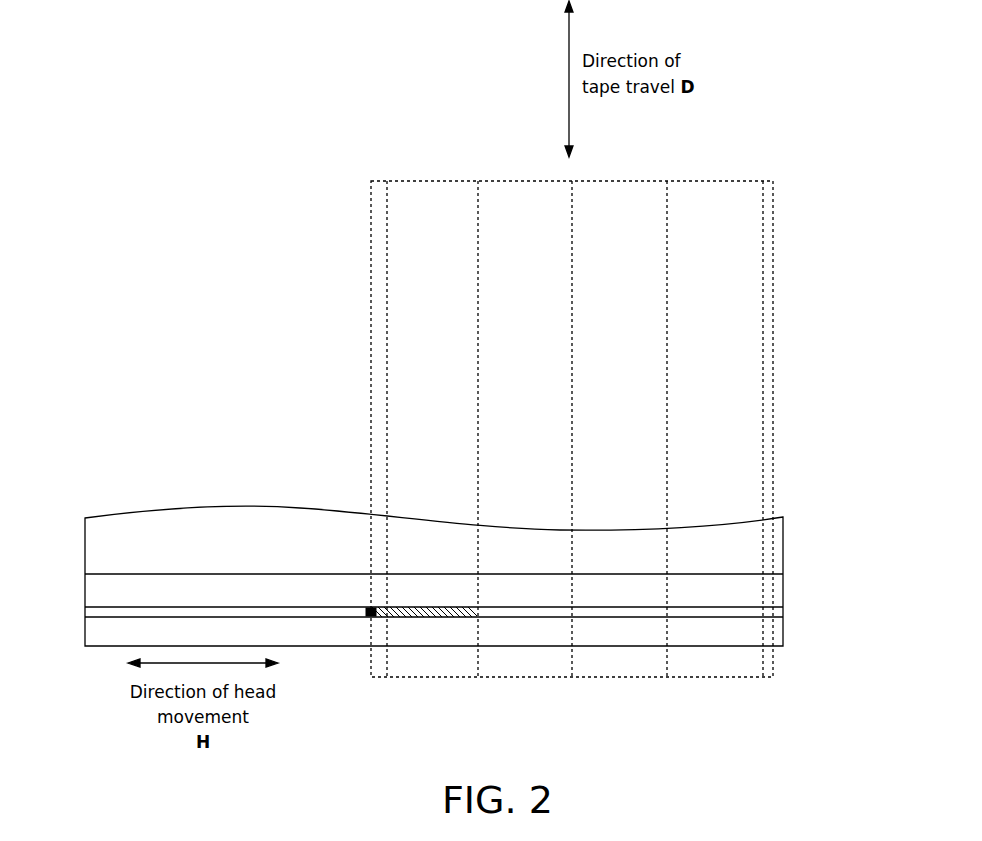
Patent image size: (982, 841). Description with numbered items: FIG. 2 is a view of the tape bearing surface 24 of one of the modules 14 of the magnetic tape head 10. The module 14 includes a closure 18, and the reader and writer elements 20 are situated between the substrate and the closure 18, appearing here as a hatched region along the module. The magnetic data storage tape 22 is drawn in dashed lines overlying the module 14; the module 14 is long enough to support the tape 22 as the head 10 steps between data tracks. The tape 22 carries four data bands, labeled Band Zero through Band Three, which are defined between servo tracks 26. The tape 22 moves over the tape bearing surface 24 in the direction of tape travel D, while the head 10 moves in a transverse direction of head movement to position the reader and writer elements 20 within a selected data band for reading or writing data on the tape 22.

The magnetic tape head 10 is at (785, 557).
The module 14 is at (207, 508).
The closure 18 is at (85, 628).
The reader and writer elements 20 is at (372, 608).
The magnetic data storage tape 22 is at (370, 263).
The tape bearing surface 24 is at (268, 590).
The servo tracks 26 is at (477, 373).